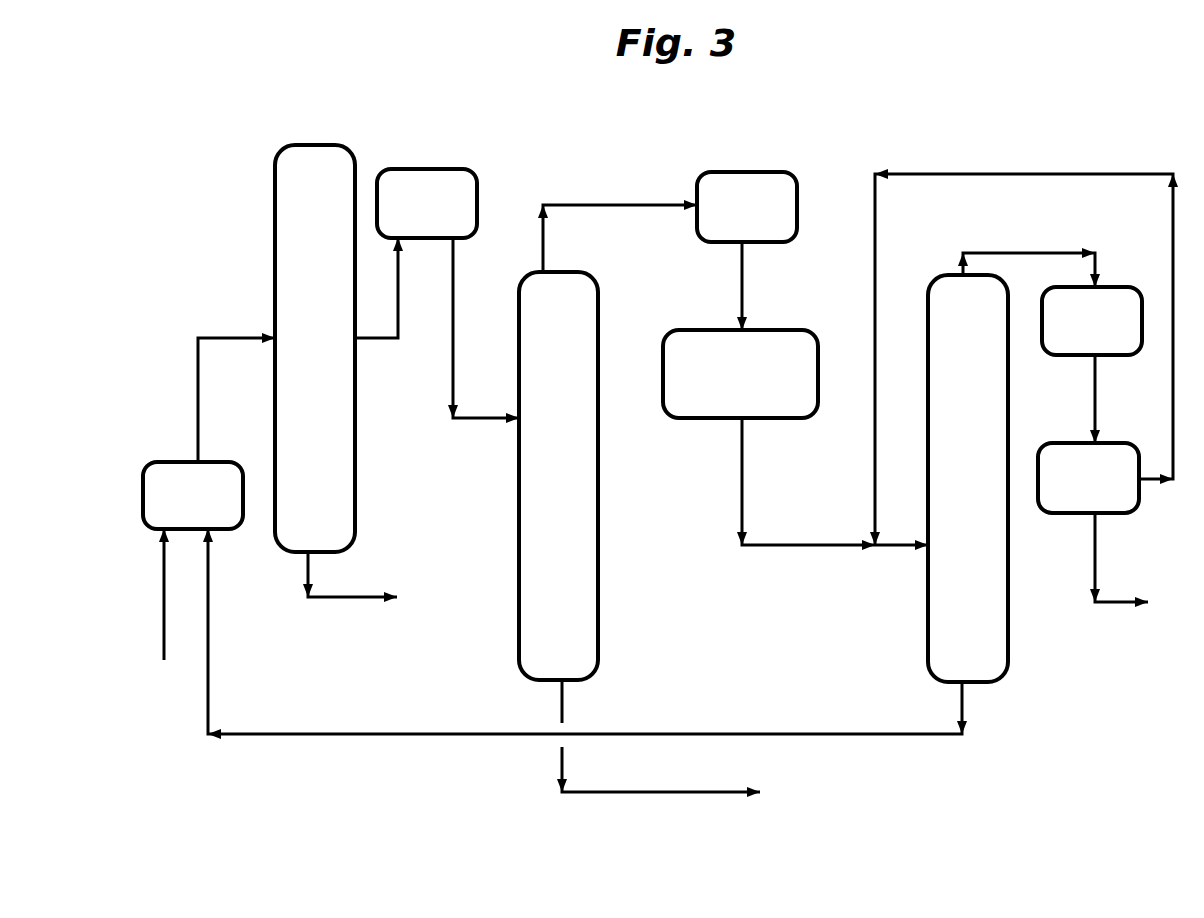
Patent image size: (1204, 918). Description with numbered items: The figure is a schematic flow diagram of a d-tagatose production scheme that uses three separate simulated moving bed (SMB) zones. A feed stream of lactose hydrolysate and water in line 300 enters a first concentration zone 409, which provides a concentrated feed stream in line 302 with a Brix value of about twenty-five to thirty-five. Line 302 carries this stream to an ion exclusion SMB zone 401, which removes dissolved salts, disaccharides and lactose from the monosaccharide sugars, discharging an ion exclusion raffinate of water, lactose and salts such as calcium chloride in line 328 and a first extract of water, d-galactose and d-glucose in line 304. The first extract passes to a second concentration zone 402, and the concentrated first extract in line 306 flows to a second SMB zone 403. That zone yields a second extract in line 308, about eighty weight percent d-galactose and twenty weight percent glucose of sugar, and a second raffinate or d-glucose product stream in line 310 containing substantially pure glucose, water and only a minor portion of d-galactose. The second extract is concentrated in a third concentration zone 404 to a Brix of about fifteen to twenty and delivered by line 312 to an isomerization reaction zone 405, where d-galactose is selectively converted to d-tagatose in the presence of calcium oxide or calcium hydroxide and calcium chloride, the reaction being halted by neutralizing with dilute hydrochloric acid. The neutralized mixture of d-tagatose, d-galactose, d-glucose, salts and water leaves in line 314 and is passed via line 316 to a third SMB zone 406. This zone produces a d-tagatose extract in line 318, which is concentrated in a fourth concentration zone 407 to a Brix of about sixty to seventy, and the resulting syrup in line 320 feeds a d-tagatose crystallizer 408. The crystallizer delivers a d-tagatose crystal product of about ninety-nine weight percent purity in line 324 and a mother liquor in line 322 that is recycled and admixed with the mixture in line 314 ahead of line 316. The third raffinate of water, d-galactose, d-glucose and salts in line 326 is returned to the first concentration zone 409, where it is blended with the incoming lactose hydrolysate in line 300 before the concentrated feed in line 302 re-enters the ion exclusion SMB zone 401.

The feed stream line 300 is at (164, 658).
The concentrated feed stream line 302 is at (242, 338).
The first extract stream line 304 is at (370, 340).
The concentrated first extract stream line 306 is at (474, 420).
The second extract stream line 308 is at (582, 205).
The second raffinate stream line 310 is at (648, 792).
The isomerization zone feed stream line 312 is at (740, 298).
The neutralized isomerization reaction mixture line 314 is at (741, 512).
The third SMB zone feed line 316 is at (883, 548).
The d-tagatose extract stream line 318 is at (994, 253).
The concentrated d-tagatose extract stream line 320 is at (1093, 419).
The mother liquor stream line 322 is at (877, 230).
The d-tagatose crystal product stream line 324 is at (1112, 604).
The third raffinate stream line 326 is at (210, 630).
The ion exclusion raffinate stream line 328 is at (376, 599).
The ion exclusion SMB zone 401 is at (315, 348).
The separator 402 is at (427, 203).
The second SMB zone 403 is at (558, 476).
The third concentration zone 404 is at (747, 207).
The isomerization reaction zone 405 is at (740, 374).
The third SMB zone 406 is at (968, 478).
The fourth concentration zone 407 is at (1092, 321).
The d-tagatose crystallizer 408 is at (1088, 478).
The first concentration zone 409 is at (193, 495).